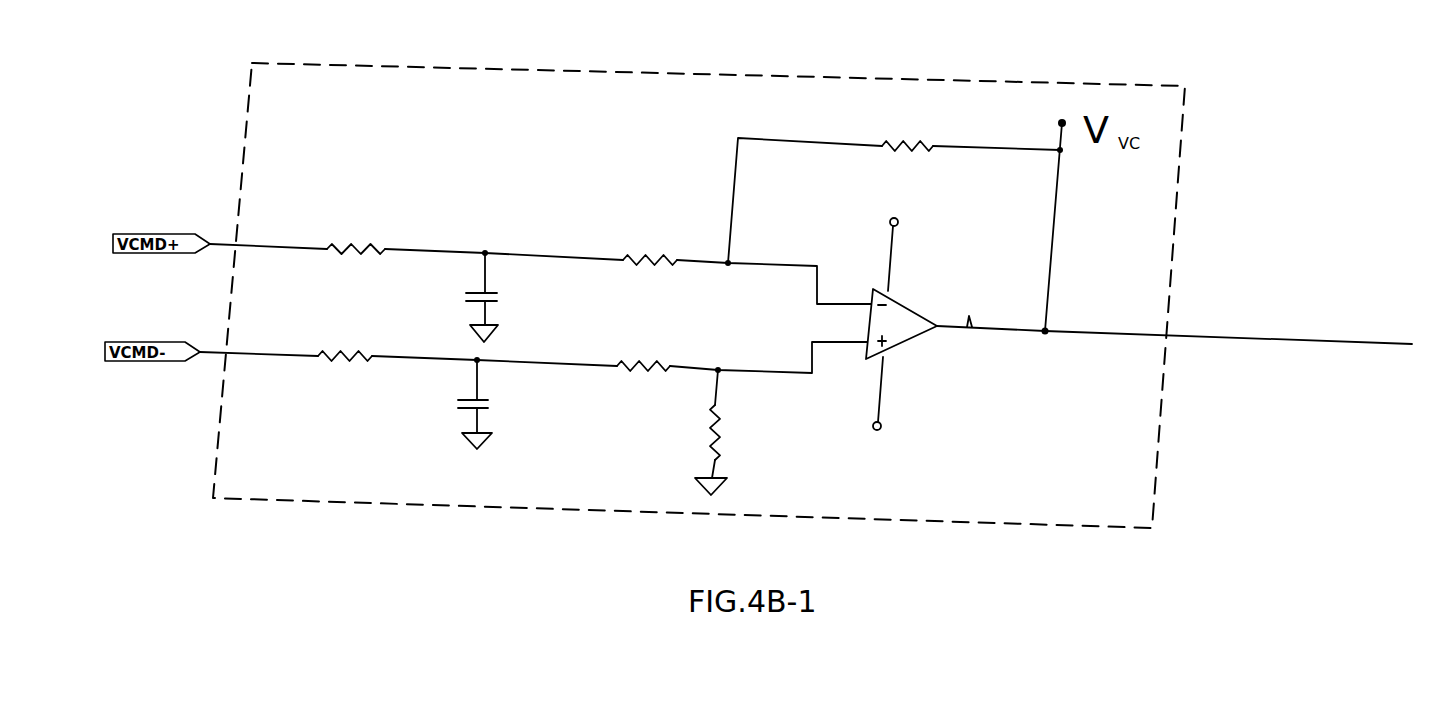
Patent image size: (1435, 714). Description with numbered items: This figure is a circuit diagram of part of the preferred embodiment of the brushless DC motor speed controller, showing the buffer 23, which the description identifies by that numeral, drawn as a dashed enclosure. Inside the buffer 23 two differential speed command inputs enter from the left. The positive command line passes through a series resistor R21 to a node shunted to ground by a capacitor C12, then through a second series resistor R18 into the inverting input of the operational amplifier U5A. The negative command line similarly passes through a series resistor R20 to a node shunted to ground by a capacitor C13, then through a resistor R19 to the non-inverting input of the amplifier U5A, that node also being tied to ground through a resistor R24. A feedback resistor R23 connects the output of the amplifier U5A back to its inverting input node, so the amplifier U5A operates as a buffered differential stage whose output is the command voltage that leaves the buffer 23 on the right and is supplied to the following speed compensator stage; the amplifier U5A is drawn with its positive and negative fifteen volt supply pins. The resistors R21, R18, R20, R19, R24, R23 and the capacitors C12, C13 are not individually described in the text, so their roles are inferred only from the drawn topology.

The buffer 23 is at (1178, 197).
The input resistor R21 is at (356, 234).
The input resistor R18 is at (650, 246).
The feedback resistor R23 is at (907, 133).
The input resistor R20 is at (345, 342).
The input resistor R19 is at (643, 352).
The ground resistor R24 is at (735, 432).
The filter capacitor C12 is at (504, 297).
The filter capacitor C13 is at (494, 404).
The operational amplifier U5A (TLO74) U5A is at (923, 324).